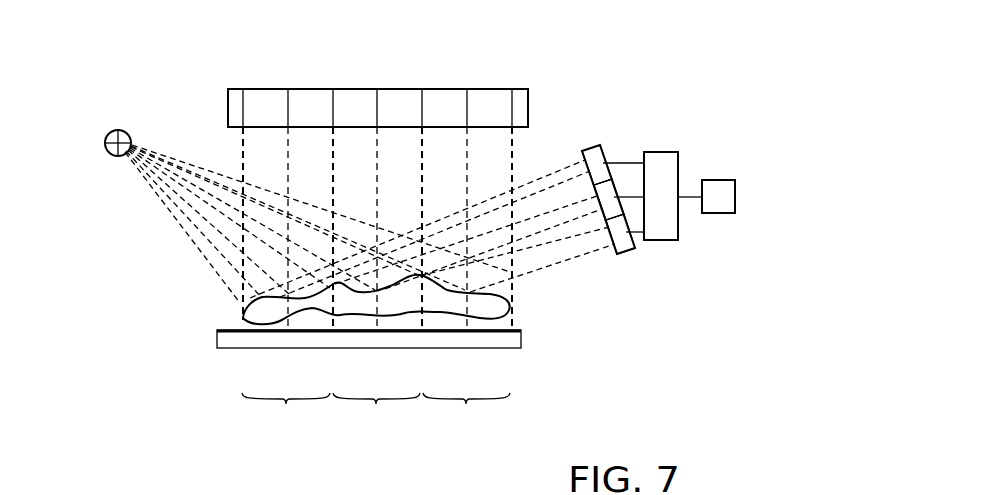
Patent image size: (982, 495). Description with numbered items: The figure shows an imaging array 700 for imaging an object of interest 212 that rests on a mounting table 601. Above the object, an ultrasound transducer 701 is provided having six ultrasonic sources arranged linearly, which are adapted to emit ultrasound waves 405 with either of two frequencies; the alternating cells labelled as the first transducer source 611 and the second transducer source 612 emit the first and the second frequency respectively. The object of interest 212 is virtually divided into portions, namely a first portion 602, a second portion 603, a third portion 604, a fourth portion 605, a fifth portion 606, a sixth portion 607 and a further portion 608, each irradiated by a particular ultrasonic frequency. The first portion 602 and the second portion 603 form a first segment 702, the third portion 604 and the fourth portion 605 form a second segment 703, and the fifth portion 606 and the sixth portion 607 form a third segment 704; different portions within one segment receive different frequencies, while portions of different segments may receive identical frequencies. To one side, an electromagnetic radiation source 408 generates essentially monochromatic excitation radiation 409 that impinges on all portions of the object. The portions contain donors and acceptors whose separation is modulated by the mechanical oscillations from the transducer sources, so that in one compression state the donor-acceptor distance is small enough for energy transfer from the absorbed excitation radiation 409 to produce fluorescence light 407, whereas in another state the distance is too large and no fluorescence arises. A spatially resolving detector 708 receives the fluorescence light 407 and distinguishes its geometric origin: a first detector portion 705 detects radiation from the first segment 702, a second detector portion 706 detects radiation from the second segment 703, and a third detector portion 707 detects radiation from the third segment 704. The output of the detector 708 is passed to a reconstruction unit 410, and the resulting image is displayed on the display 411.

The electromagnetic radiation source 408 is at (108, 134).
The excitation radiation 409 is at (172, 204).
The ultrasound transducer 701 is at (220, 100).
The first transducer source 611 is at (253, 88).
The second transducer source 612 is at (300, 88).
The ultrasound waves 405 is at (333, 153).
The fluorescence light 407 is at (542, 193).
The object of interest 212 is at (225, 303).
The mounting table 601 is at (217, 335).
The first portion 602 is at (259, 313).
The second portion 603 is at (305, 315).
The third portion 604 is at (350, 313).
The fourth portion 605 is at (395, 313).
The fifth portion 606 is at (438, 312).
The sixth portion 607 is at (482, 308).
The seventh portion 608 is at (505, 312).
The first segment 702 is at (286, 412).
The second segment 703 is at (376, 412).
The third segment 704 is at (466, 412).
The detector 708 is at (596, 127).
The first detector portion 705 is at (590, 150).
The second detector portion 706 is at (595, 192).
The third detector portion 707 is at (627, 254).
The reconstruction unit 410 is at (661, 151).
The display 411 is at (719, 179).
The imaging array 700 is at (655, 77).